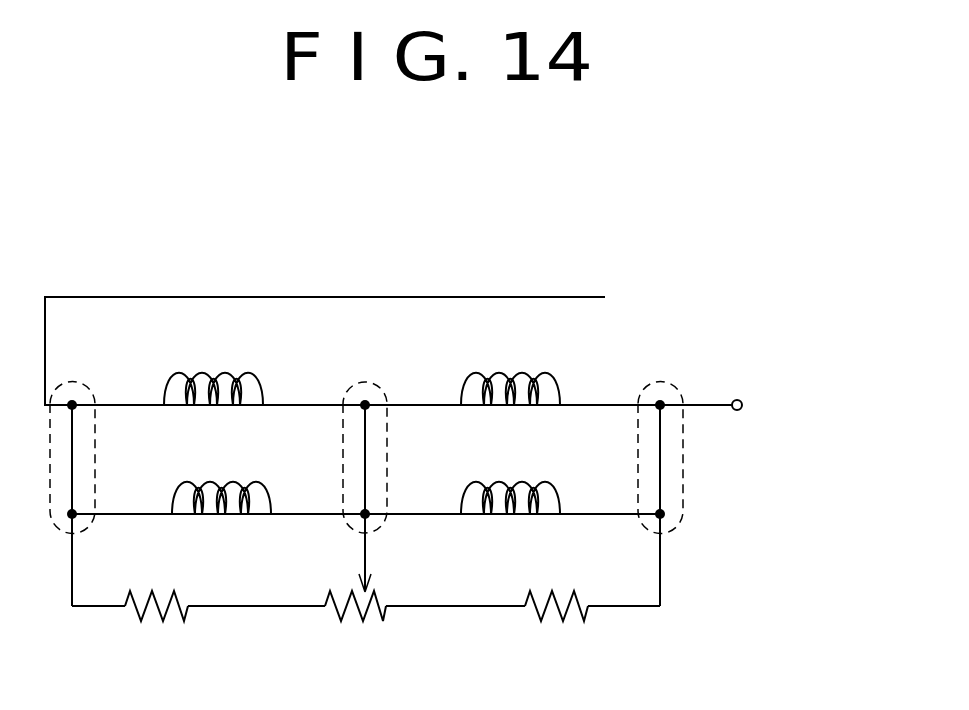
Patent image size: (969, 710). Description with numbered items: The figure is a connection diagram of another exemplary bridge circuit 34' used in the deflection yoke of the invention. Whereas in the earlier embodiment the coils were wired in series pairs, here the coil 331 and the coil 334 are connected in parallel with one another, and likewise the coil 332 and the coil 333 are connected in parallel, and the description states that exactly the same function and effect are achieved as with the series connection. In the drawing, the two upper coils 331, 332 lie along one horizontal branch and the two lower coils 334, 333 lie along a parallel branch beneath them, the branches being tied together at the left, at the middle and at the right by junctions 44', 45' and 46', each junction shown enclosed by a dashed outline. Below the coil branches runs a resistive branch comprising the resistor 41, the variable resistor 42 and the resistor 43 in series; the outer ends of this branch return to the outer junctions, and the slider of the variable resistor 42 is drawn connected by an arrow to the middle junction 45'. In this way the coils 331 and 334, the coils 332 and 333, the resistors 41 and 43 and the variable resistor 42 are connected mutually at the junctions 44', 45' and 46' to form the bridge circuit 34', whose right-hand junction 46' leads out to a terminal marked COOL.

The bridge circuit 34' is at (450, 410).
The coil 331 is at (213, 362).
The coil 332 is at (510, 364).
The coil 333 is at (510, 473).
The coil 334 is at (221, 472).
The resistor 41 is at (156, 629).
The variable resistor 42 is at (355, 591).
The resistor 43 is at (556, 630).
The junction 44' is at (85, 418).
The junction 45' is at (383, 418).
The junction 46' is at (678, 421).